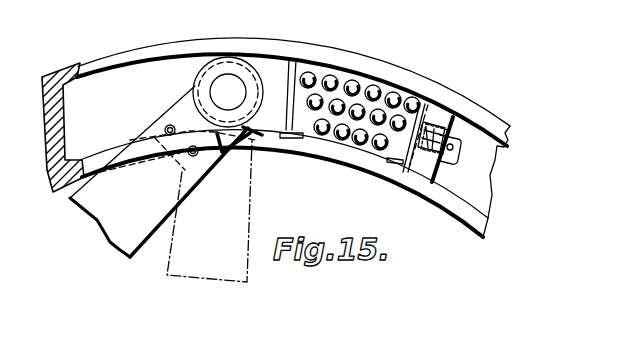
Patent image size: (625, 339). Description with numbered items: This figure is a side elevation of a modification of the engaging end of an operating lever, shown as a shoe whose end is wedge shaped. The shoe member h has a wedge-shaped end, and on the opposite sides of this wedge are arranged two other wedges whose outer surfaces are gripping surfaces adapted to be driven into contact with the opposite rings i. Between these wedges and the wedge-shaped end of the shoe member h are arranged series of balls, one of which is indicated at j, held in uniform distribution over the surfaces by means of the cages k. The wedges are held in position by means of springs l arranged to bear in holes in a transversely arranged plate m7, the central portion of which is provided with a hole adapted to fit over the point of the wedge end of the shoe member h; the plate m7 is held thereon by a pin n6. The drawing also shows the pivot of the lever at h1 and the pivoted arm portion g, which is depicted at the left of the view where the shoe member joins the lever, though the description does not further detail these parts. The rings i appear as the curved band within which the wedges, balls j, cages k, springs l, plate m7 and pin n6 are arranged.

The pivoted arm g is at (108, 215).
The pivot hub h1 is at (227, 88).
The shoe member h is at (278, 127).
The ball j is at (308, 78).
The cage k is at (340, 80).
The ring i is at (383, 72).
The spring l is at (438, 122).
The transversely arranged plate m7 is at (447, 118).
The pin n6 is at (455, 150).